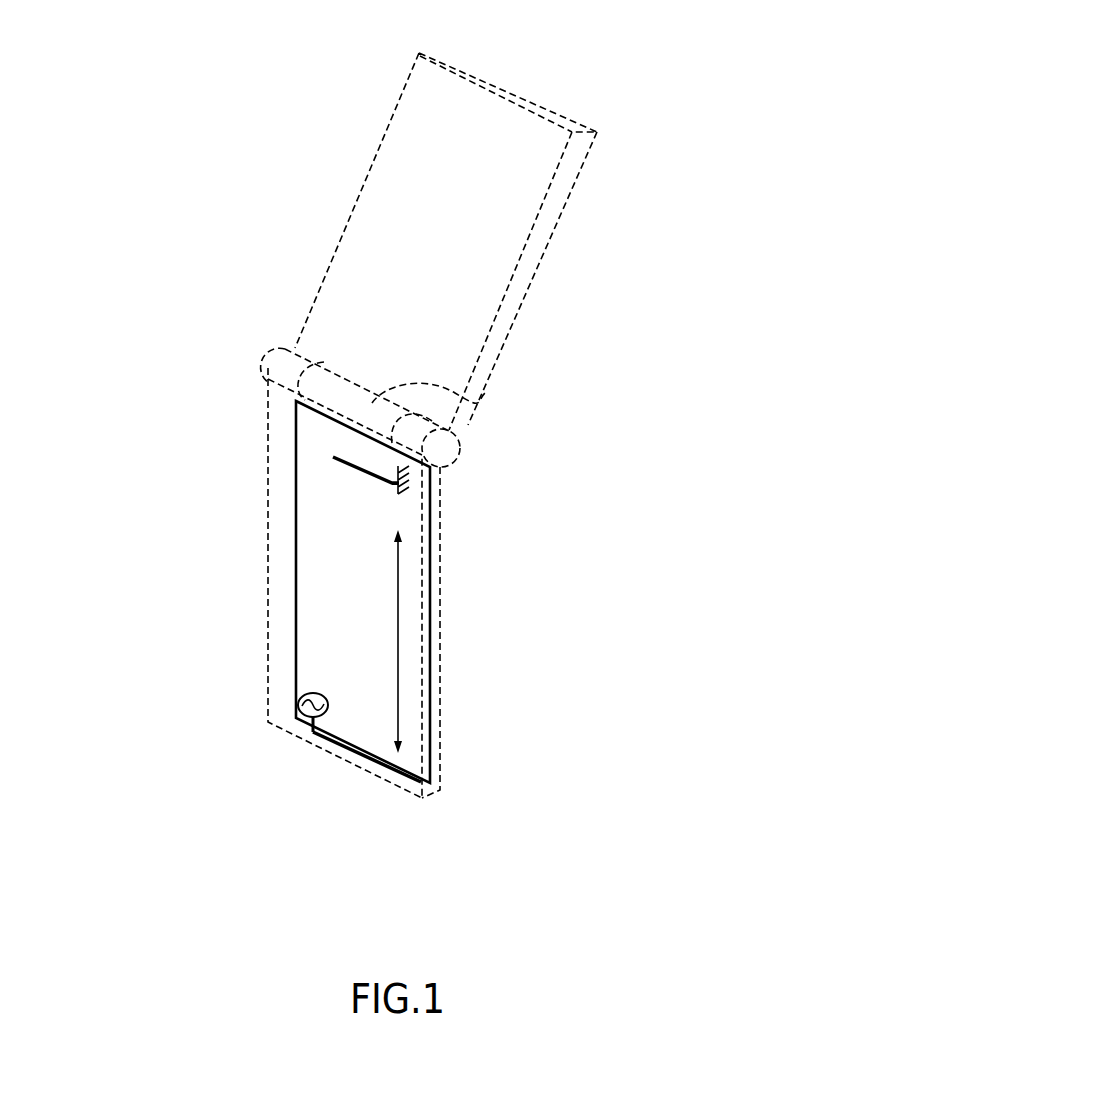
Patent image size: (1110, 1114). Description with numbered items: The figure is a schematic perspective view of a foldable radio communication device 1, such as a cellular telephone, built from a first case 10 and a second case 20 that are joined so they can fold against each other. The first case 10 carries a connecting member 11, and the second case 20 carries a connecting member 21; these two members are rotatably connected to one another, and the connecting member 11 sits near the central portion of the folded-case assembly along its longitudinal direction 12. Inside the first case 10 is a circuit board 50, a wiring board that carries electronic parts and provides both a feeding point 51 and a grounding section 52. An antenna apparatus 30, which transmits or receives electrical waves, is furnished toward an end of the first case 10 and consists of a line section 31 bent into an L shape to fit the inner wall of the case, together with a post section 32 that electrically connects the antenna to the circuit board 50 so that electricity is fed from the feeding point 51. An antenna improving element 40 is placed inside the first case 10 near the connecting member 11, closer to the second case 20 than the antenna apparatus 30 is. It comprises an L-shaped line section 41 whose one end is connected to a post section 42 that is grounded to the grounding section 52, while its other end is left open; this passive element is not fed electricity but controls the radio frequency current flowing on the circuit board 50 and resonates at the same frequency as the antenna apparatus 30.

The radio communication device 1 is at (665, 36).
The first case 10 is at (267, 573).
The connecting member 11 is at (273, 362).
The longitudinal direction 12 is at (400, 656).
The second case 20 is at (358, 193).
The connecting member 21 is at (442, 395).
The antenna apparatus 30 is at (316, 749).
The line section 31 is at (360, 757).
The post section 32 is at (311, 729).
The antenna improving element 40 is at (344, 488).
The line section 41 is at (336, 459).
The post section 42 is at (392, 484).
The circuit board 50 is at (296, 625).
The feeding point 51 is at (300, 700).
The grounding section 52 is at (400, 492).